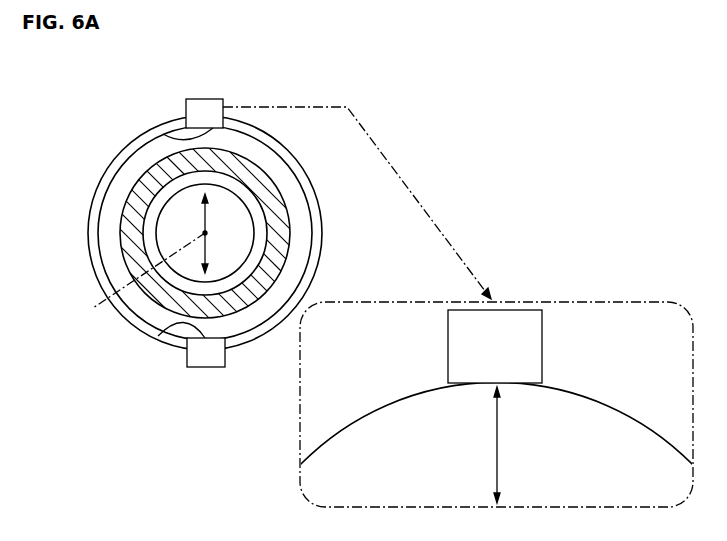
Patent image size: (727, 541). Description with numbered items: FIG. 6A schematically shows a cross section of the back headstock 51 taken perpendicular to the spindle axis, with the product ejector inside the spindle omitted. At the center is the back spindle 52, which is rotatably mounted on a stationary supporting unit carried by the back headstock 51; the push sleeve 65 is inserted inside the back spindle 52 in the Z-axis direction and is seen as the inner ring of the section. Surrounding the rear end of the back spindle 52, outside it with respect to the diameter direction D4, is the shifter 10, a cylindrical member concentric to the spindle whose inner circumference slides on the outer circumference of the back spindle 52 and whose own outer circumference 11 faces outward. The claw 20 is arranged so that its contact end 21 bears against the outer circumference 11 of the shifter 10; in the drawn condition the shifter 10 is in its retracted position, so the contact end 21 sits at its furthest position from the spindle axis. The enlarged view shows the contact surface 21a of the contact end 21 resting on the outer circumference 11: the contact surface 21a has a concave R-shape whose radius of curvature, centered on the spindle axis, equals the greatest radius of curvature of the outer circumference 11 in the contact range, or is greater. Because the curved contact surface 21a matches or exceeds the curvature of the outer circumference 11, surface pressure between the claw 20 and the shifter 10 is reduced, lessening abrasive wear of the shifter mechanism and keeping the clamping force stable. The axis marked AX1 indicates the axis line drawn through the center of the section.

The back headstock 51 is at (80, 95).
The shifter 10 is at (112, 163).
The outer circumference 11 is at (107, 185).
The back spindle 52 is at (125, 226).
The push sleeve 65 is at (148, 262).
The rotation axis AX1 is at (128, 280).
The diameter direction D4 is at (368, 348).
The contact end 21 is at (199, 99).
The claw 20 is at (374, 254).
The contact surface 21a is at (176, 134).